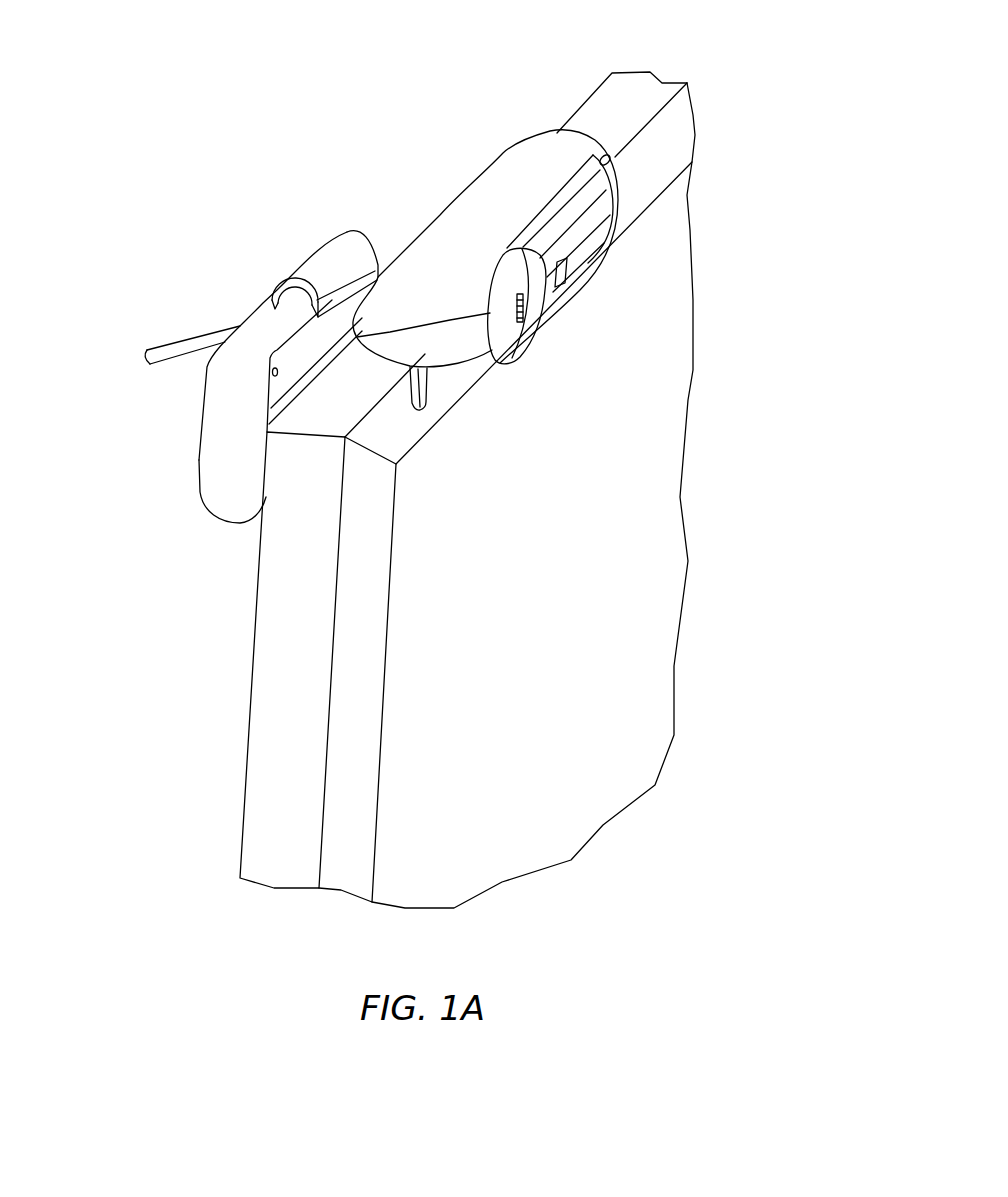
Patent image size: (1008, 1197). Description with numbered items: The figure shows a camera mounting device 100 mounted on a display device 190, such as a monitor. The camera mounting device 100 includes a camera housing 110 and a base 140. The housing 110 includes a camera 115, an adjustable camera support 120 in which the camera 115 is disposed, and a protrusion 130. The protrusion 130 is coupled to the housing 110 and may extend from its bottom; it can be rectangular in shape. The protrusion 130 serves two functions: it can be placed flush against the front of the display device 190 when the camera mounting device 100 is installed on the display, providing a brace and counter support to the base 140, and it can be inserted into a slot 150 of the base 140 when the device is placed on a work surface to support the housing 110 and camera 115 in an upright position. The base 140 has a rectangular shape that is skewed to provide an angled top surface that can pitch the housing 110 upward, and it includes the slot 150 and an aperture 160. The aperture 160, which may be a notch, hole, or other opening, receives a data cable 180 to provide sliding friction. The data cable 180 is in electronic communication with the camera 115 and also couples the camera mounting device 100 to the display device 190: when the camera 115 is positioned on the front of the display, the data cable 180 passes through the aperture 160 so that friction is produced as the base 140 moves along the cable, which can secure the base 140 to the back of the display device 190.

The camera mounting device 100 is at (560, 118).
The camera housing 110 is at (477, 213).
The camera 115 is at (537, 290).
The adjustable camera support 120 is at (603, 183).
The protrusion 130 is at (433, 383).
The base 140 is at (235, 415).
The slot 150 is at (294, 368).
The aperture 160 is at (287, 282).
The data cable 180 is at (163, 352).
The display device 190 is at (293, 662).